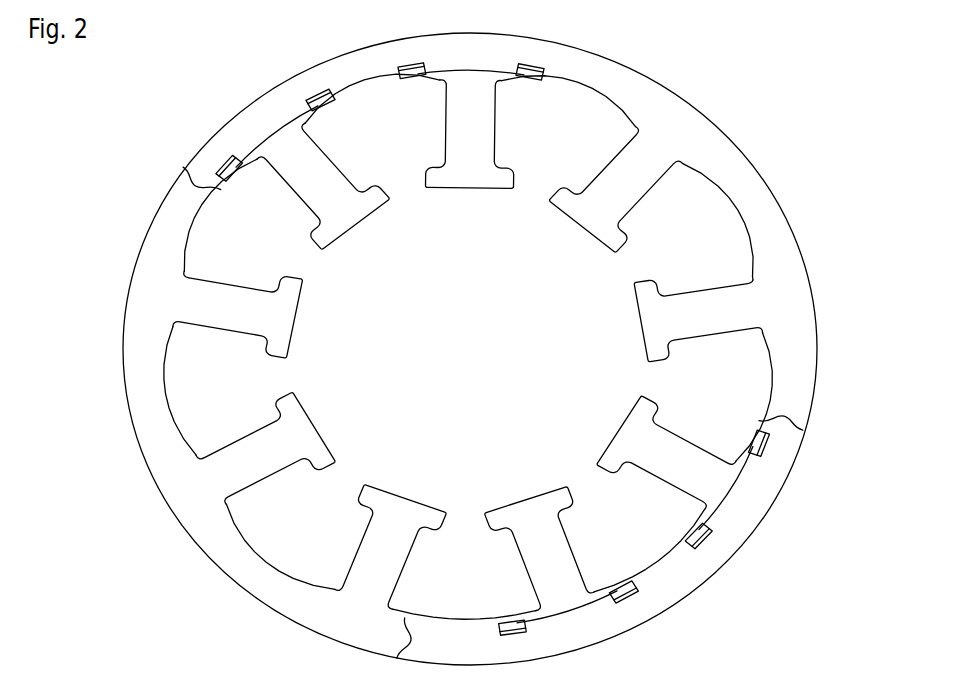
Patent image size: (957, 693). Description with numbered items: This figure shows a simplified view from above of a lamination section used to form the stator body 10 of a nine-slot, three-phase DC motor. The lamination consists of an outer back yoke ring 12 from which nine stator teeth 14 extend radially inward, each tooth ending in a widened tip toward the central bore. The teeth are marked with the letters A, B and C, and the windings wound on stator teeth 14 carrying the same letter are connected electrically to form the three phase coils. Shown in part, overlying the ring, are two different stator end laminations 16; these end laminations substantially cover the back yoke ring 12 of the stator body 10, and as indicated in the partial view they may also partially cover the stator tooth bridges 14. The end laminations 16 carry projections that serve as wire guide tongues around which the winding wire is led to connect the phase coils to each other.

The stator body 10 is at (777, 293).
The back yoke ring 12 is at (763, 220).
The stator teeth 14 is at (640, 168).
The stator end laminations 16 is at (255, 137).